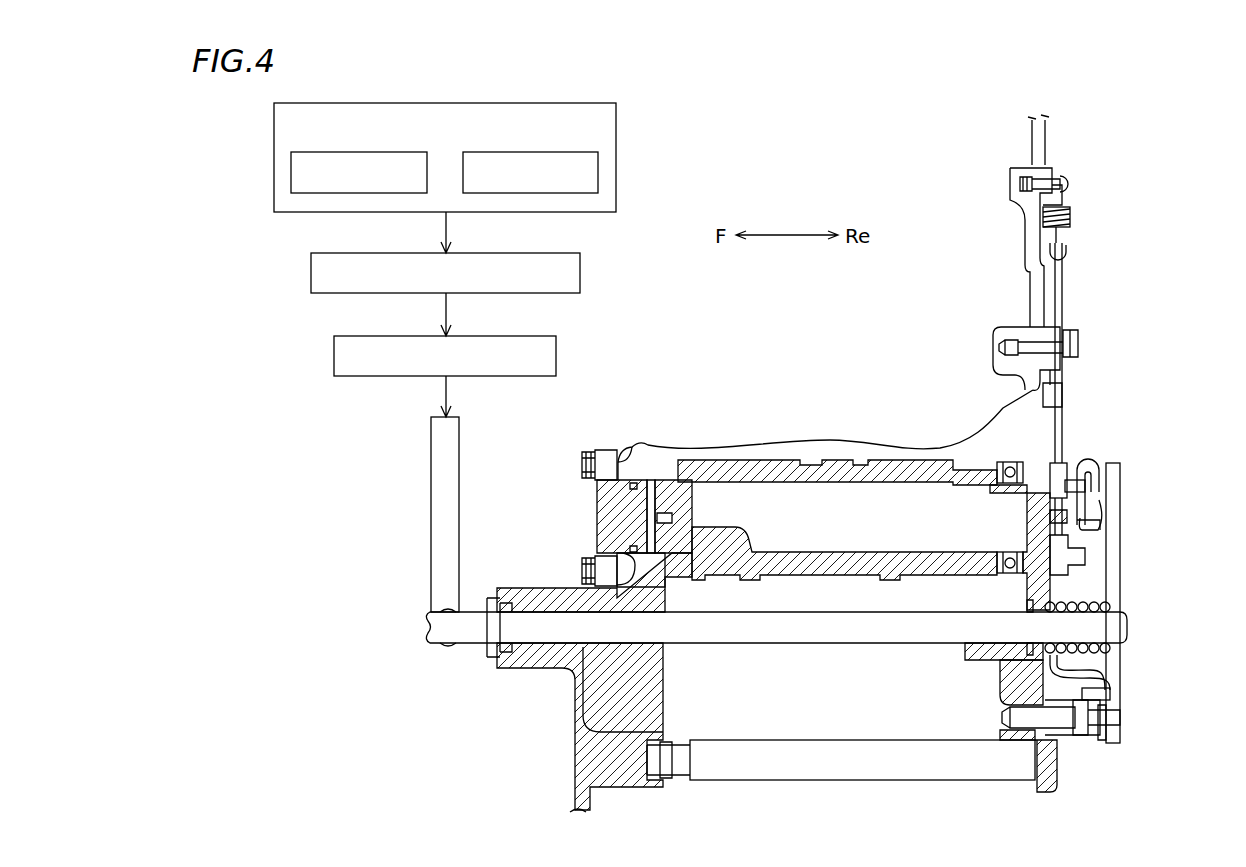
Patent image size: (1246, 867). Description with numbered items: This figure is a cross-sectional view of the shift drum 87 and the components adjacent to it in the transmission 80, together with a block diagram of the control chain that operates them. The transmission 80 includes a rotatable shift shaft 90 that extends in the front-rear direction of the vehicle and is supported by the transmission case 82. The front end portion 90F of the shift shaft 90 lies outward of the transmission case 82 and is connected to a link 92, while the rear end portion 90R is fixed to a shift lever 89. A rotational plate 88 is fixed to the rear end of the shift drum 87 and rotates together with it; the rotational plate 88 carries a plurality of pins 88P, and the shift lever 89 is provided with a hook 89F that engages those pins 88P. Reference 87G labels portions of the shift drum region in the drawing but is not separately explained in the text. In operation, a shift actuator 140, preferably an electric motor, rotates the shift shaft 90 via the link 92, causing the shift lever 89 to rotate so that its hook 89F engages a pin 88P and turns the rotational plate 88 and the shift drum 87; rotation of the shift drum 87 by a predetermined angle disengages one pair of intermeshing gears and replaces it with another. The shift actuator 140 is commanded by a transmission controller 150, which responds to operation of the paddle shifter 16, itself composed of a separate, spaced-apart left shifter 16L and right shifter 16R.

The paddle shifter 16 is at (274, 140).
The left shifter 16L is at (291, 174).
The right shifter 16R is at (598, 186).
The transmission controller 150 is at (311, 278).
The shift actuator 140 is at (334, 360).
The link 92 is at (431, 500).
The transmission 80 is at (547, 472).
The transmission case 82 is at (567, 768).
The shift drum 87 is at (671, 471).
The guide cylinder 87G is at (840, 460).
The rotational plate 88 is at (1054, 585).
The pins 88P is at (1093, 484).
The shift lever 89 is at (1128, 592).
The hook 89F is at (1090, 462).
The shift shaft 90 is at (585, 628).
The front end portion 90F is at (430, 632).
The rear end portion 90R is at (1125, 630).